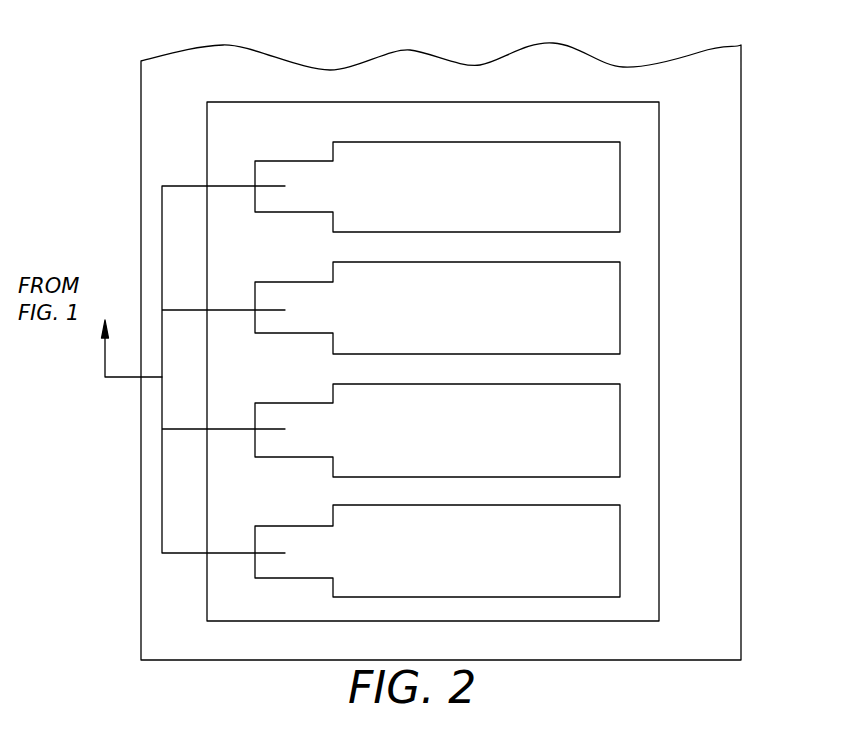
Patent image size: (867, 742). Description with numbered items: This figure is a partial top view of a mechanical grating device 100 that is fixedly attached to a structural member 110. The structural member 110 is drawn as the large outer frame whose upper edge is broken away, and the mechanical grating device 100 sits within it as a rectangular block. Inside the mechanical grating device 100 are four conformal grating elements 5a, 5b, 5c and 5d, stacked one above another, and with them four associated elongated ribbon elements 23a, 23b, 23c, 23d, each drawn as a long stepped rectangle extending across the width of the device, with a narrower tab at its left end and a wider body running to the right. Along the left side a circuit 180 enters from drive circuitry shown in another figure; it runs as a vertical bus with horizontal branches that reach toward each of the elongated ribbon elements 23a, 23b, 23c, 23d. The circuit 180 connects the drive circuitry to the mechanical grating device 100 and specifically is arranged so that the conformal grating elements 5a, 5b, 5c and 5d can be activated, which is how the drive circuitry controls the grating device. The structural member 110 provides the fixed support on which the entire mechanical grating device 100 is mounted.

The mechanical grating device 100 is at (591, 106).
The structural member 110 is at (727, 632).
The elongated ribbon element 23a is at (600, 188).
The elongated ribbon element 23b is at (602, 313).
The elongated ribbon element 23c is at (603, 410).
The elongated ribbon element 23d is at (605, 535).
The circuit 180 is at (105, 357).
The conformal grating element 5a is at (222, 133).
The conformal grating element 5b is at (242, 254).
The conformal grating element 5c is at (232, 474).
The conformal grating element 5d is at (245, 589).